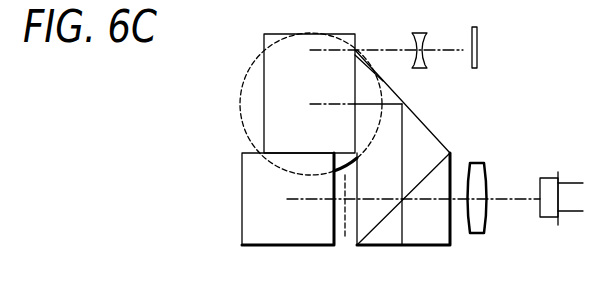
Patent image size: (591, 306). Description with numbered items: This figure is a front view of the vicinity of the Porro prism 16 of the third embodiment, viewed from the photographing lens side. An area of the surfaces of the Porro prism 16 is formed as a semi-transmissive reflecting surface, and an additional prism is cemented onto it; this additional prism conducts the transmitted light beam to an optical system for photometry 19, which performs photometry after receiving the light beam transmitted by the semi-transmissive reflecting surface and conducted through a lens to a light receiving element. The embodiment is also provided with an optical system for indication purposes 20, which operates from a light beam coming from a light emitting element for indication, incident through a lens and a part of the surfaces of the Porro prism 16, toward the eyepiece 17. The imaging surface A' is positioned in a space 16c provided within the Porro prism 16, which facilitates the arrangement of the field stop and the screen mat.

The Porro prism 16 is at (242, 199).
The space 16c is at (349, 245).
The eyepiece 17 is at (256, 64).
The optical system for photometry 19 is at (563, 250).
The optical system for indication purposes 20 is at (482, 70).
The imaging surface A' is at (327, 229).